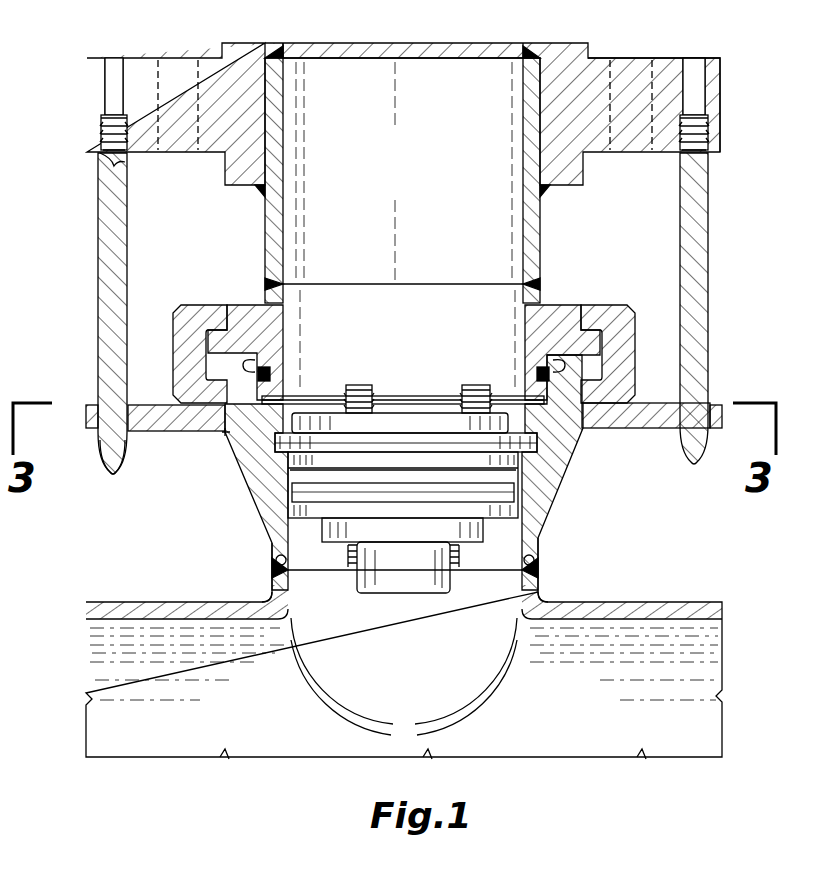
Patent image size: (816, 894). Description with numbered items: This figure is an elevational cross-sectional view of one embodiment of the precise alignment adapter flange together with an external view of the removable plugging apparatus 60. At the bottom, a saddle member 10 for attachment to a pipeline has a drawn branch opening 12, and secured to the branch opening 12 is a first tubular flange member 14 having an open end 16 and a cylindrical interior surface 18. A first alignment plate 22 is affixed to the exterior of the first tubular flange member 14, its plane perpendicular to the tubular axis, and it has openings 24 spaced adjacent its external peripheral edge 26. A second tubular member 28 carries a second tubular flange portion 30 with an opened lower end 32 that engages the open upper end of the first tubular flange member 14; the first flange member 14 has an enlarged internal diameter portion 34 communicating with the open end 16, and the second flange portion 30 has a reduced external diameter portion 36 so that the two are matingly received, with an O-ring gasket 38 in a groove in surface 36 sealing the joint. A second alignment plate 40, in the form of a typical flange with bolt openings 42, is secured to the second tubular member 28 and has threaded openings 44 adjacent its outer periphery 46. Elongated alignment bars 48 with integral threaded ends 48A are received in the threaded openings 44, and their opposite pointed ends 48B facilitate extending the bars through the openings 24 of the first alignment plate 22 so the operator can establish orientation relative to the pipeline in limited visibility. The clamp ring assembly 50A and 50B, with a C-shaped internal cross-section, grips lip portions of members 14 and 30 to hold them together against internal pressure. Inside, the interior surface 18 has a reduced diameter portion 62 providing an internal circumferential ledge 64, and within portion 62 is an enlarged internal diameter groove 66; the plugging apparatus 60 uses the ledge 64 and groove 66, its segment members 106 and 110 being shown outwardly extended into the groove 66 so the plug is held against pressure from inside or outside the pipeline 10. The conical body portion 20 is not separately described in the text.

The saddle member 10 is at (676, 603).
The drawn branch opening 12 is at (266, 600).
The first tubular flange member 14 is at (256, 494).
The open end 16 is at (208, 350).
The cylindrical interior surface 18 is at (276, 556).
The right conical body portion 20 is at (600, 412).
The first alignment plate 22 is at (648, 428).
The openings 24 is at (87, 412).
The external peripheral edge 26 is at (716, 422).
The second tubular member 28 is at (541, 226).
The second tubular flange portion 30 is at (556, 306).
The opened lower end 32 is at (510, 396).
The enlarged internal diameter portion 34 is at (598, 308).
The reduced external diameter portion 36 is at (258, 360).
The O-ring gasket 38 is at (270, 376).
The second alignment plate 40 is at (160, 58).
The openings 42 is at (198, 58).
The threaded openings 44 is at (100, 148).
The outer periphery 46 is at (720, 56).
The alignment bars 48 is at (100, 262).
The threaded ends 48A is at (128, 150).
The pointed ends 48B is at (110, 470).
The clamp ring assembly portion 50A is at (207, 312).
The clamp ring assembly portion 50B is at (628, 335).
The removable plugging apparatus 60 is at (411, 368).
The reduced diameter portion 62 is at (289, 456).
The internal circumferential ledge 64 is at (290, 513).
The enlarged internal diameter groove 66 is at (228, 433).
The segment member 106 is at (497, 445).
The segment member 110 is at (330, 443).